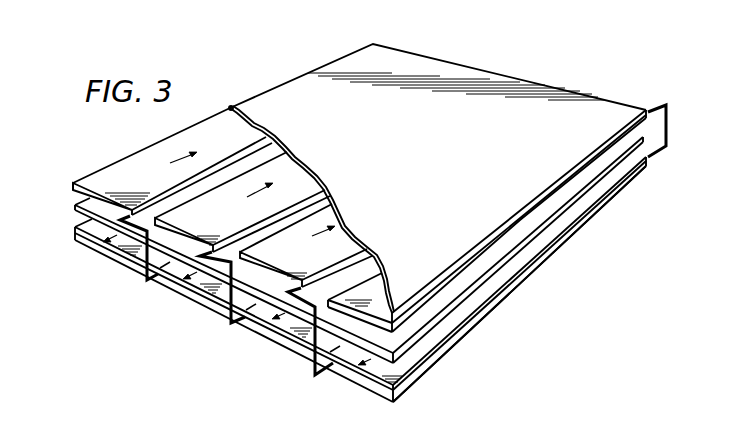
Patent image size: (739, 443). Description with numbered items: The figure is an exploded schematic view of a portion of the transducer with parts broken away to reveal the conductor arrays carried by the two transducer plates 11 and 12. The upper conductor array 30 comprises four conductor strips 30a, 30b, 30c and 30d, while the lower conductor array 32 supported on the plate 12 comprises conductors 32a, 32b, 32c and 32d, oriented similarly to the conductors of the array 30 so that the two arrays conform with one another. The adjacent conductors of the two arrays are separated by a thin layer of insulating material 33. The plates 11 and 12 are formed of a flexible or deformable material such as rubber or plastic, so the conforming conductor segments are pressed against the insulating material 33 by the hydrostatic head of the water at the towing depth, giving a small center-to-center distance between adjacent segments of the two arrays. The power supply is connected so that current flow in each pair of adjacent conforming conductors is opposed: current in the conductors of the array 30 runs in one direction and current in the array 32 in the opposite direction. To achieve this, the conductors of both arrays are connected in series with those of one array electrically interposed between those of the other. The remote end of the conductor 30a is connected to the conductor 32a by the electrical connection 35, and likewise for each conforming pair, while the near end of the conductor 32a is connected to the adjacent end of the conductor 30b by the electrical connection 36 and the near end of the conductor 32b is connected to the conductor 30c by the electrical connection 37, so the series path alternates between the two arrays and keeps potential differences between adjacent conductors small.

The transducer plate 11 is at (428, 58).
The transducer plate 12 is at (442, 360).
The upper conductor array 30 is at (219, 220).
The conductor strip 30a is at (378, 299).
The conductor strip 30b is at (308, 261).
The conductor strip 30c is at (230, 220).
The conductor strip 30d is at (160, 192).
The lower conductor array 32 is at (330, 287).
The conductor 32a is at (367, 383).
The conductor 32b is at (267, 327).
The conductor 32c is at (180, 288).
The conductor 32d is at (113, 250).
The insulating material layer 33 is at (72, 200).
The electrical connection 35 is at (670, 129).
The electrical connection 36 is at (312, 376).
The electrical connection 37 is at (229, 324).